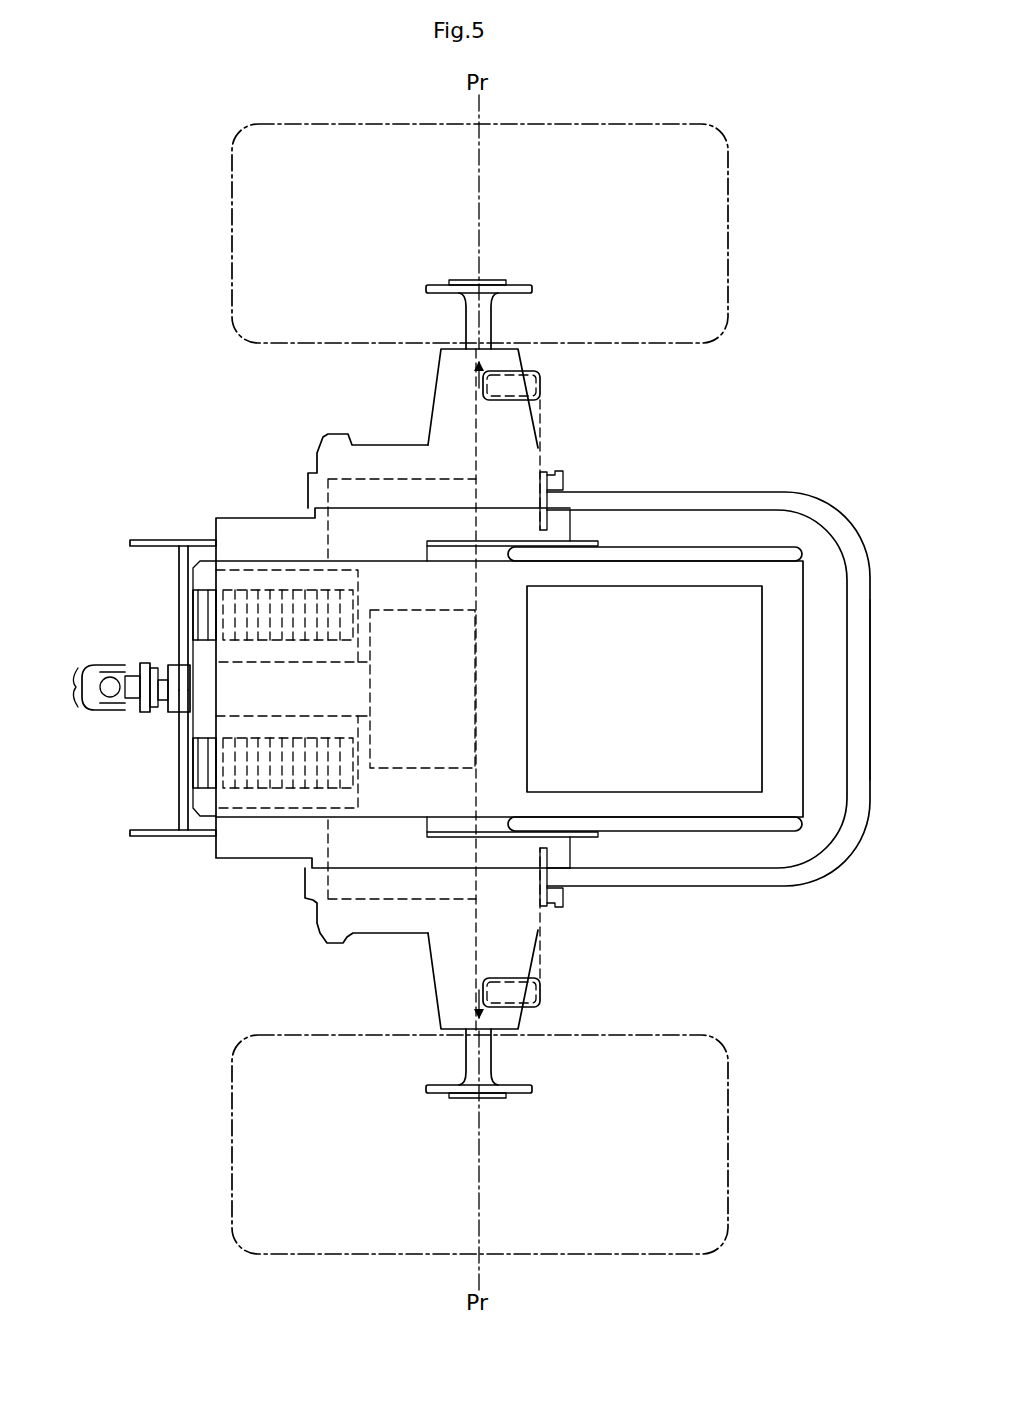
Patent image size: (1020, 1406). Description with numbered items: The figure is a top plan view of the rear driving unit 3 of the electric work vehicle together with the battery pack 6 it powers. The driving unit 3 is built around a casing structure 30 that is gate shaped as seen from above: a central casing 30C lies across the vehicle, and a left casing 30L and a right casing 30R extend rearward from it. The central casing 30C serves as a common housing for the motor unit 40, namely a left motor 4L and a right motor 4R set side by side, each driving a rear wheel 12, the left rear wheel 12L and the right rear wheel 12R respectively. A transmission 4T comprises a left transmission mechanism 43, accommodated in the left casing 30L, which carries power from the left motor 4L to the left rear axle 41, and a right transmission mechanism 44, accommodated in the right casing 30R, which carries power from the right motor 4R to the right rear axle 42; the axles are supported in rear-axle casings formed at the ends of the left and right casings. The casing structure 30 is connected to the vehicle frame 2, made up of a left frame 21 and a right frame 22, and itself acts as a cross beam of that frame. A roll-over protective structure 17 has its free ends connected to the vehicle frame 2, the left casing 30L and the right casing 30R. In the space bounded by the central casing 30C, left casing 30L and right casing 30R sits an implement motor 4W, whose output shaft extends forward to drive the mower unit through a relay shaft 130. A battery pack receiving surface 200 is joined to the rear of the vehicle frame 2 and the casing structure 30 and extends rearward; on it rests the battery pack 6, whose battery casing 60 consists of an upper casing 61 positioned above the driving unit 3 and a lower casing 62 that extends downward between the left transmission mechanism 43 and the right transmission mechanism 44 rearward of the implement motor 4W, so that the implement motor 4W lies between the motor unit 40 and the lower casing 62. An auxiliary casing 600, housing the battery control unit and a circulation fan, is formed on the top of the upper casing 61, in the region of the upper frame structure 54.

The right rear wheel 12R is at (728, 222).
The left rear wheel 12L is at (728, 1152).
The rear wheel 12 is at (547, 689).
The right rear axle 42 is at (466, 312).
The left rear axle 41 is at (466, 1064).
The roll-over protective structure 17 is at (532, 368).
The right transmission mechanism 44 is at (380, 478).
The left transmission mechanism 43 is at (395, 905).
The transmission 4T is at (393, 689).
The right casing 30R is at (332, 447).
The left casing 30L is at (320, 905).
The central casing 30C is at (198, 652).
The casing structure 30 is at (450, 700).
The driving unit 3 is at (450, 700).
The battery pack 6 is at (751, 538).
The right frame 22 is at (160, 540).
The left frame 21 is at (190, 838).
The vehicle frame 2 is at (161, 695).
The upper casing 61 is at (275, 590).
The lower casing 62 is at (452, 752).
The battery casing 60 is at (430, 636).
The right motor 4R is at (200, 607).
The left motor 4L is at (198, 770).
The motor unit 40 is at (132, 682).
The implement motor 4W is at (445, 657).
The relay shaft 130 is at (76, 700).
The auxiliary casing 600 is at (647, 780).
The upper frame structure 54 is at (645, 760).
The battery pack receiving surface 200 is at (802, 880).